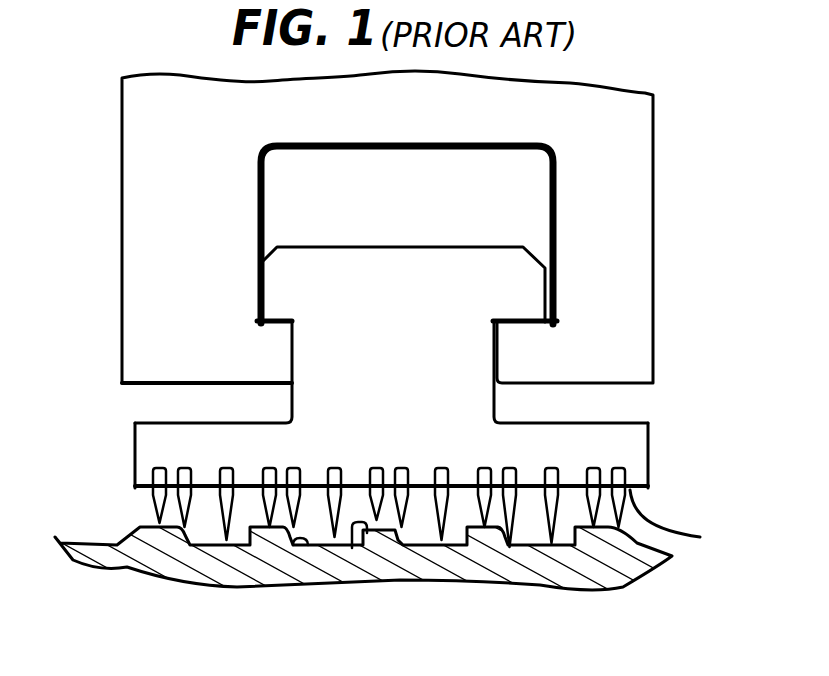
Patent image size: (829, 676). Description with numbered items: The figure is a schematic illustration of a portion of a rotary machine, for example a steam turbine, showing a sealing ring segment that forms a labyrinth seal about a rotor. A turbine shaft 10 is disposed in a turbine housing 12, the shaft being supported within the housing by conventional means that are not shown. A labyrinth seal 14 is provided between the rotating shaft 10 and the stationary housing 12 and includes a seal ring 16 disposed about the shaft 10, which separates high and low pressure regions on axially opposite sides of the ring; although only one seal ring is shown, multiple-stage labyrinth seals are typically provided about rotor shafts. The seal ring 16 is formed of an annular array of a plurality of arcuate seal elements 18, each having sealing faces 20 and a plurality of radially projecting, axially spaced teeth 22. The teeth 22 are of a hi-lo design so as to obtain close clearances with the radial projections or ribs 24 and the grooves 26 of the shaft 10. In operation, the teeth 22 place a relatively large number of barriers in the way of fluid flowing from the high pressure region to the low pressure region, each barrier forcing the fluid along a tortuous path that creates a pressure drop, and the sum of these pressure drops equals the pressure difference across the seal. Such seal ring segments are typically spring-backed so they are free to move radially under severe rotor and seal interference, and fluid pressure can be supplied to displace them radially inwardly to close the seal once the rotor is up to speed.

The turbine shaft 10 is at (97, 543).
The turbine housing 12 is at (121, 260).
The labyrinth seal 14 is at (444, 555).
The seal ring 16 is at (407, 395).
The arcuate seal elements 18 is at (167, 423).
The sealing faces 20 is at (686, 522).
The teeth 22 is at (516, 508).
The ribs 24 is at (352, 548).
The grooves 26 is at (318, 547).